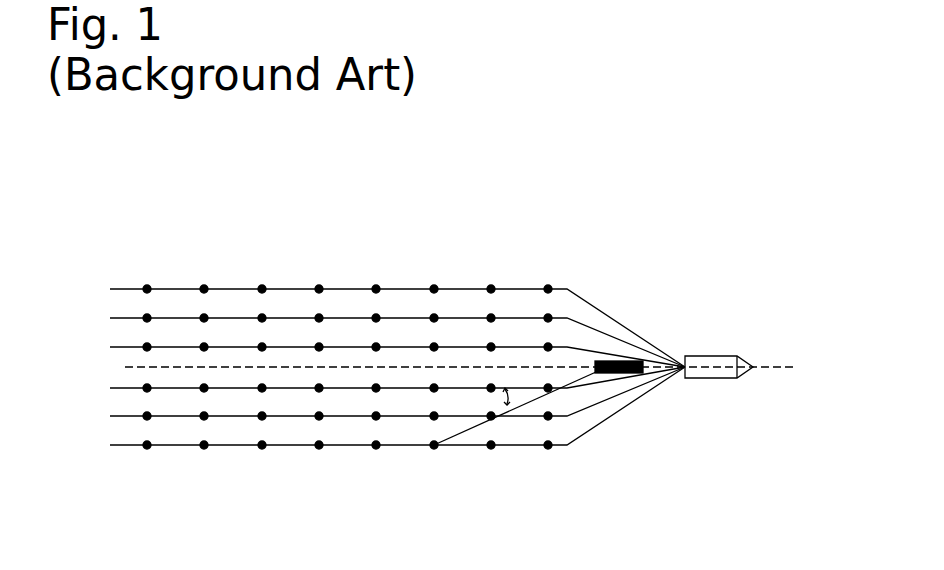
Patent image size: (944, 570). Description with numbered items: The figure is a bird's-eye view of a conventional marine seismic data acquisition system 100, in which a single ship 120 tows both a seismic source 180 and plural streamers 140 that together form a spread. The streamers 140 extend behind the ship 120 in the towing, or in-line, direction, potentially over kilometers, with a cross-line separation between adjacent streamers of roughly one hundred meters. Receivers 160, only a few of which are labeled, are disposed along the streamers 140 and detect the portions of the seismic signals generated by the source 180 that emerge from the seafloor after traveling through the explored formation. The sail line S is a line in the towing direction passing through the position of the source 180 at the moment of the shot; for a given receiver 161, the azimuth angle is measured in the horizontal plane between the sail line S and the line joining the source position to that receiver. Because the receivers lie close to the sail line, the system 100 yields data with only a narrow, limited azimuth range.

The data acquisition system 100 is at (343, 196).
The ship 120 is at (718, 355).
The streamers 140 is at (110, 289).
The receivers 160 is at (207, 446).
The receiver 161 is at (515, 431).
The source 180 is at (625, 361).
The sail line S is at (775, 367).